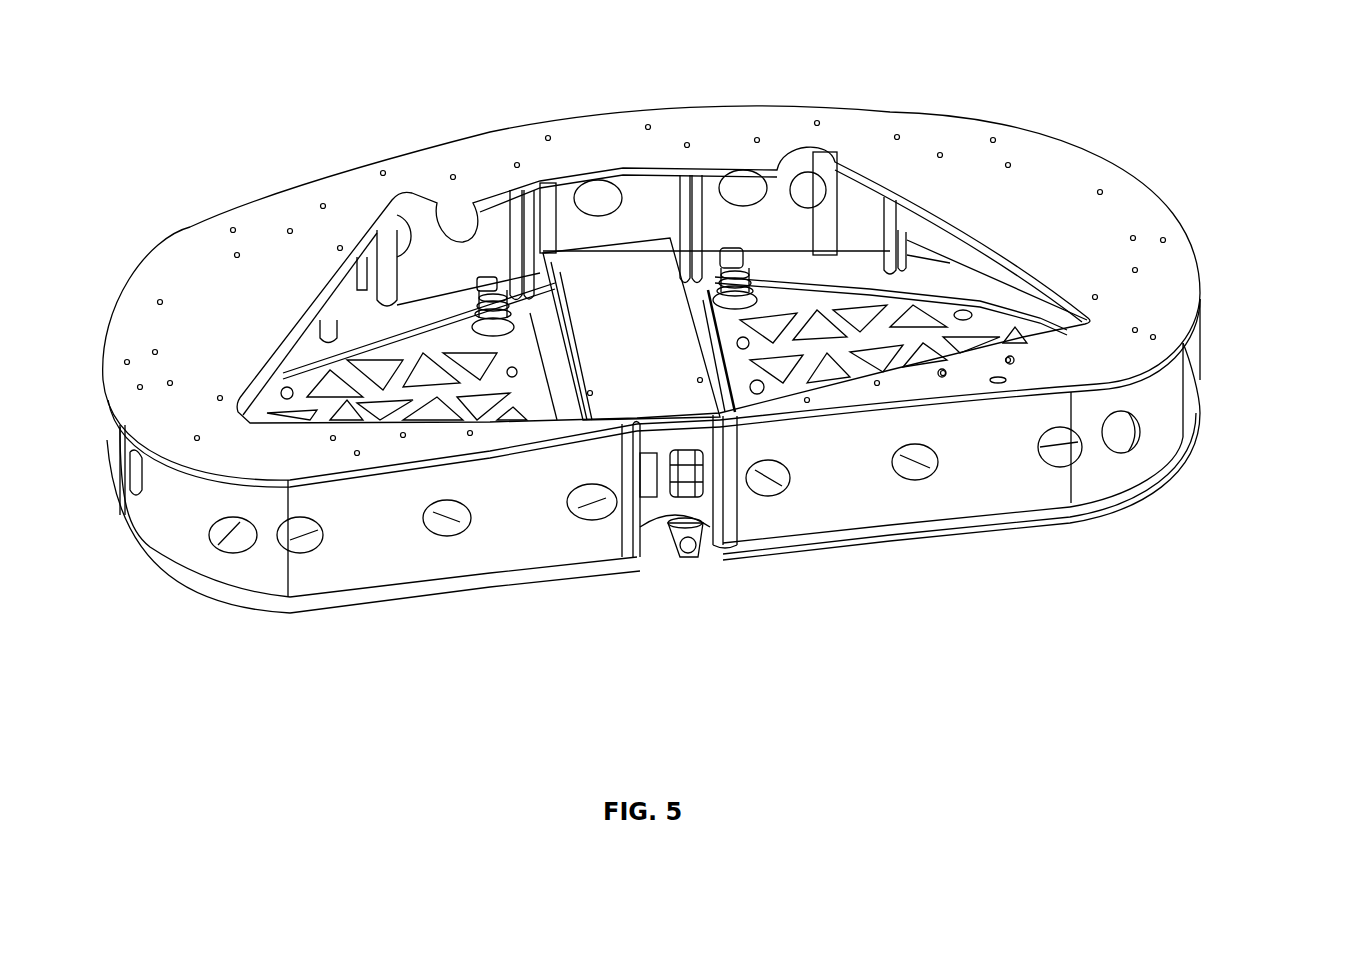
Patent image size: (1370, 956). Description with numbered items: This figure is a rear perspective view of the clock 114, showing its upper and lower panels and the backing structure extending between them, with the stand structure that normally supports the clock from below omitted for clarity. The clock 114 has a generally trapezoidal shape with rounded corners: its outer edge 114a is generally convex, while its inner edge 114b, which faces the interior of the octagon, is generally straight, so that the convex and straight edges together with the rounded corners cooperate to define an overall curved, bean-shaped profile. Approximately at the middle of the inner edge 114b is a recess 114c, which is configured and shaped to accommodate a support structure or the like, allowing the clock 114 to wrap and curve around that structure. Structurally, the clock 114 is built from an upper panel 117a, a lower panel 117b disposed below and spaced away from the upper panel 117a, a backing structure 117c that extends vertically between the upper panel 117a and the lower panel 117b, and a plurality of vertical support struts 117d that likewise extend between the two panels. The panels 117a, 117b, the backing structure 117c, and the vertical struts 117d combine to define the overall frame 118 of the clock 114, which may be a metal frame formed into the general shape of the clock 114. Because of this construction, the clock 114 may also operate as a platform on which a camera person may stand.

The frame 118 is at (193, 175).
The clock 114 is at (1163, 165).
The outer edge 114a is at (585, 113).
The inner edge 114b is at (875, 545).
The recess 114c is at (683, 593).
The upper panel 117a is at (1170, 290).
The lower panel 117b is at (1042, 527).
The backing structure 117c is at (1163, 407).
The vertical support struts 117d is at (827, 217).